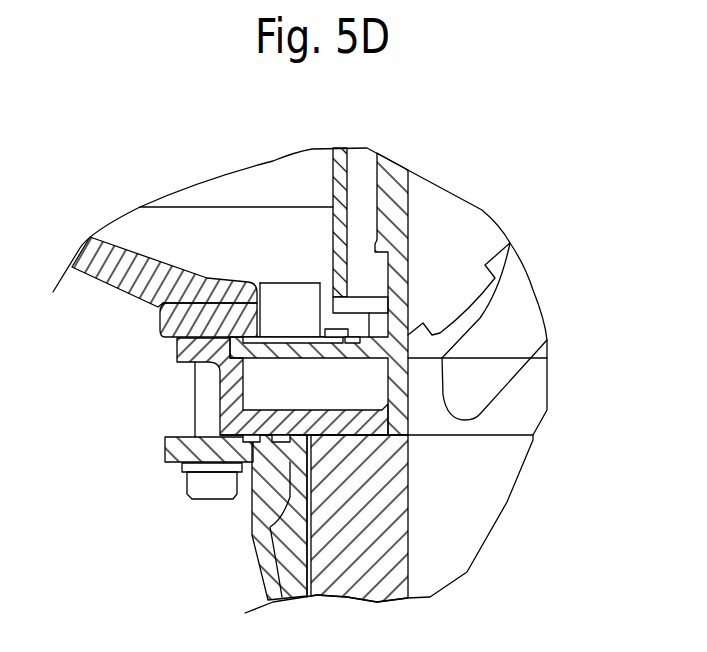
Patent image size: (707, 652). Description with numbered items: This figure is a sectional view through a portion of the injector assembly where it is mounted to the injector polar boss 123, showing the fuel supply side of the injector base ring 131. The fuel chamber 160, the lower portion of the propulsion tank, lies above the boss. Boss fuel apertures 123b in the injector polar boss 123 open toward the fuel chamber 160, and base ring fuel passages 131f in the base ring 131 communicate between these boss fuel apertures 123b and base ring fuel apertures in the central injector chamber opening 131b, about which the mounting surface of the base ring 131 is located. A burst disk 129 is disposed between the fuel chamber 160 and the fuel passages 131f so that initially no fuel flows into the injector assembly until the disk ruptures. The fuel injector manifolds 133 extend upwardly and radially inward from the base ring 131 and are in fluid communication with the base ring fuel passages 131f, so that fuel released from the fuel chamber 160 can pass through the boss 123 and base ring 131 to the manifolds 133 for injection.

The injector polar boss 123 is at (133, 252).
The boss fuel apertures 123b is at (258, 333).
The oxidant burst disk 129 is at (157, 307).
The injector base ring 131 is at (175, 350).
The central injector chamber opening 131b is at (528, 405).
The base ring fuel passages 131f is at (260, 413).
The fuel injector manifolds 133 is at (527, 312).
The fuel chamber 160 is at (307, 197).